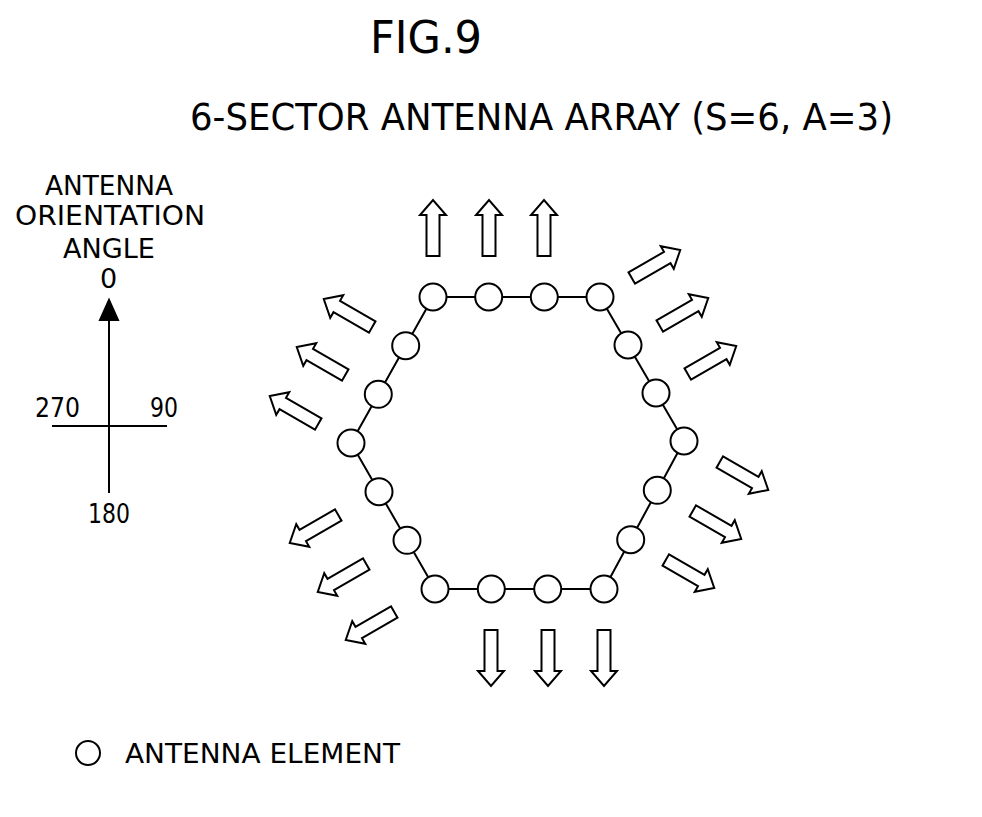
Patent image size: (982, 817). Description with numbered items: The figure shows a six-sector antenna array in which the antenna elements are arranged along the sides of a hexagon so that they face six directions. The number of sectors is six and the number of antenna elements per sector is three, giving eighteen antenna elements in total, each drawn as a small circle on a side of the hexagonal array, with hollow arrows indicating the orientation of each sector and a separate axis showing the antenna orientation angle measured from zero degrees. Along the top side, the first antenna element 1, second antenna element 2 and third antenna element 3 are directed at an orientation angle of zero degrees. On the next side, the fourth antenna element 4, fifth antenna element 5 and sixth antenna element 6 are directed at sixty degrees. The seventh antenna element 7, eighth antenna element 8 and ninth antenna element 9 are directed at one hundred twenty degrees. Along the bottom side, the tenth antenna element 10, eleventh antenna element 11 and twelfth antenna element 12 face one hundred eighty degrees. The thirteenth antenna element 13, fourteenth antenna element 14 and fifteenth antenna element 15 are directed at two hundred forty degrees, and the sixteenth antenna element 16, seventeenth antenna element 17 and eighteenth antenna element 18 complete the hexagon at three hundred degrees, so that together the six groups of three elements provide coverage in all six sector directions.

The first antenna element 1 is at (446, 269).
The second antenna element 2 is at (495, 269).
The third antenna element 3 is at (540, 269).
The fourth antenna element 4 is at (625, 288).
The fifth antenna element 5 is at (646, 326).
The sixth antenna element 6 is at (674, 371).
The seventh antenna element 7 is at (703, 461).
The eighth antenna element 8 is at (676, 505).
The ninth antenna element 9 is at (656, 551).
The tenth antenna element 10 is at (604, 616).
The eleventh antenna element 11 is at (546, 616).
The twelfth antenna element 12 is at (491, 616).
The thirteenth antenna element 13 is at (399, 598).
The fourteenth antenna element 14 is at (392, 560).
The fifteenth antenna element 15 is at (363, 516).
The sixteenth antenna element 16 is at (339, 424).
The seventeenth antenna element 17 is at (367, 379).
The eighteenth antenna element 18 is at (394, 334).